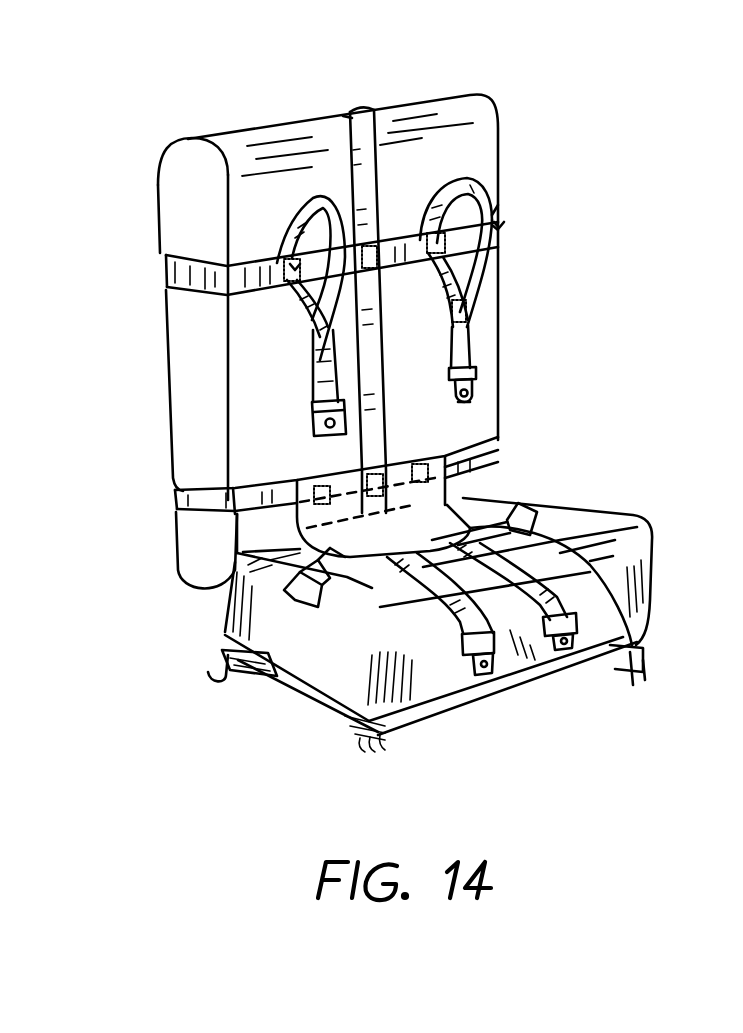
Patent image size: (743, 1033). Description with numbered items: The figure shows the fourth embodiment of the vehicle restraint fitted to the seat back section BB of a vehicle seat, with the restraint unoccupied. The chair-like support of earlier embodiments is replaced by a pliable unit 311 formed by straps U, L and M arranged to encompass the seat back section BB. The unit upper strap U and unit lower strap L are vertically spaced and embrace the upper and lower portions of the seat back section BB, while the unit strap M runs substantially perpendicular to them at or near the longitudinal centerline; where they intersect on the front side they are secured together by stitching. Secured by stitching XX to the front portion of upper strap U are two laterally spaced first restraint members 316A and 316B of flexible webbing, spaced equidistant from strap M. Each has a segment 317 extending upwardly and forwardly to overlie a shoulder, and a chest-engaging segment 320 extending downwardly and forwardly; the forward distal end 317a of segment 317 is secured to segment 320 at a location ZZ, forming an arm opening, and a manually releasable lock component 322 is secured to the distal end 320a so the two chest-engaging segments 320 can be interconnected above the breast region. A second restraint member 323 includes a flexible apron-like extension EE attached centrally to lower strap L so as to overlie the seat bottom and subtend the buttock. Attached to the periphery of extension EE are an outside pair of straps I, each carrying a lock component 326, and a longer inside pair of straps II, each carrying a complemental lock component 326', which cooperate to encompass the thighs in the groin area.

The unit strap M is at (340, 118).
The pliable unit 311 is at (340, 162).
The seat back section BB is at (465, 140).
The segment 317 is at (475, 192).
The stitching XX is at (285, 268).
The unit upper strap U is at (162, 275).
The forward distal end 317a is at (485, 285).
The first restraint member 316B is at (478, 298).
The first restraint member 316A is at (292, 305).
The location ZZ is at (470, 325).
The distal end 320a is at (468, 360).
The chest-engaging segment 320 is at (330, 373).
The unit lower strap L is at (503, 441).
The lock component 322 is at (457, 400).
The apron-like extension EE is at (421, 511).
The outside pair of straps I is at (597, 512).
The lock component 326 is at (421, 618).
The inside pair of straps II is at (415, 590).
The second restraint member 323 is at (401, 575).
The lock component 326' is at (512, 688).